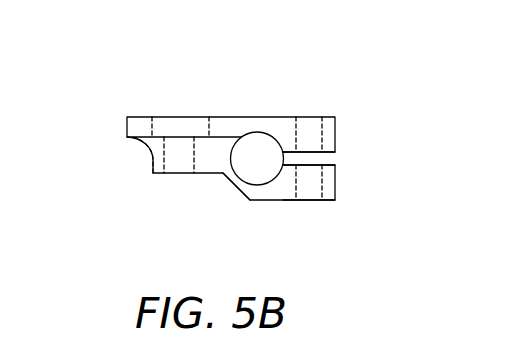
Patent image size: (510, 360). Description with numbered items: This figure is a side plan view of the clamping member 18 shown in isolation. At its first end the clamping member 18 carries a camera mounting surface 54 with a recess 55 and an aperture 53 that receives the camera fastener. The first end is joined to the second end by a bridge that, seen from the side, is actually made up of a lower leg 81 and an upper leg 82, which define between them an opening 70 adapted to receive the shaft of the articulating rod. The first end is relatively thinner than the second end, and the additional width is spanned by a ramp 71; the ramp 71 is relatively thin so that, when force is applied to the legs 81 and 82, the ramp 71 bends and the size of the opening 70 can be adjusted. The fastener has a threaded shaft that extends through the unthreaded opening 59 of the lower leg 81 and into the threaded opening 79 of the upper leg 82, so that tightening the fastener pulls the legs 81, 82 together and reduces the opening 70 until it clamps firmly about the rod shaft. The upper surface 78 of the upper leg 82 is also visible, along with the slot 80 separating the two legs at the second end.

The clamping member 18 is at (93, 185).
The recess 55 is at (158, 120).
The aperture 53 is at (188, 119).
The camera mounting surface 54 is at (228, 119).
The lower leg 81 is at (289, 123).
The unthreaded opening 59 is at (311, 123).
The opening 70 is at (260, 160).
The ramp 71 is at (243, 188).
The upper surface of upper leg 78 is at (287, 190).
The upper leg 82 is at (310, 193).
The threaded opening 79 is at (310, 200).
The slot 80 is at (332, 158).